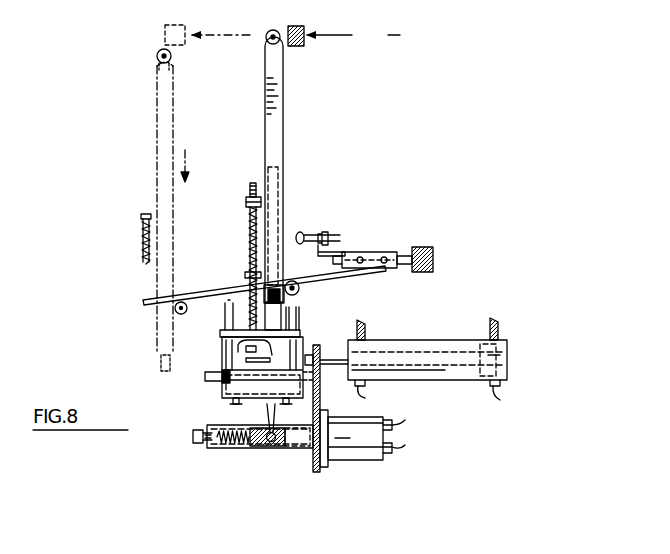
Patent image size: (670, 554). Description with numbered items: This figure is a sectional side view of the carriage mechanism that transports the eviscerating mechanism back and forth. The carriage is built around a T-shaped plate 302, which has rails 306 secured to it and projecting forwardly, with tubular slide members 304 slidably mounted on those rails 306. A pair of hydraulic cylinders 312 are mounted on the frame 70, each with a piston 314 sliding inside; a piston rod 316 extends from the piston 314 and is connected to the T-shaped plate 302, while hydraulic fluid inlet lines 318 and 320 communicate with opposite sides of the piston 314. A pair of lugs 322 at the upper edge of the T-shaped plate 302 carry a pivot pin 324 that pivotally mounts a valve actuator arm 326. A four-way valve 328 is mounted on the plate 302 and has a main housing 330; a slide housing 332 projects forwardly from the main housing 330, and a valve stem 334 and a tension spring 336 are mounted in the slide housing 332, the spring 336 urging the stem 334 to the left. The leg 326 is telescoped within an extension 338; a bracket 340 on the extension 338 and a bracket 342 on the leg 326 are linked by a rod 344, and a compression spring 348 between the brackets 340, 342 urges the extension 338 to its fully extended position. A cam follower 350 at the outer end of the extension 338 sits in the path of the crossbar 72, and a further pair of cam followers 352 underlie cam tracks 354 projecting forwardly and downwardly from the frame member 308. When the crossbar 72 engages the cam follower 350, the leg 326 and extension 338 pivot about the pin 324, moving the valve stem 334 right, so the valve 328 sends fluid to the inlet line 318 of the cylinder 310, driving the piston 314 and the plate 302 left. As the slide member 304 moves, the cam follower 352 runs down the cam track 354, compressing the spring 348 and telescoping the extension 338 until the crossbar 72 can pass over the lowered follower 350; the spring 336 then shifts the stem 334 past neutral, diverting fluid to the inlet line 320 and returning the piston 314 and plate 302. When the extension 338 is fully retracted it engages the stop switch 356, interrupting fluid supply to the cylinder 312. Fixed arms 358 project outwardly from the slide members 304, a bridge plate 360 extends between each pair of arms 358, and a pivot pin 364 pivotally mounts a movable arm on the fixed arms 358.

The frame 70 is at (430, 250).
The crossbar 72 is at (166, 28).
The T-shaped plate 302 is at (305, 470).
The tubular slide member 304 is at (243, 403).
The rail 306 is at (161, 372).
The frame member 308 is at (402, 252).
The cylinder 310 is at (420, 355).
The hydraulic cylinder 312 is at (449, 342).
The piston 314 is at (500, 355).
The piston rod 316 is at (326, 373).
The hydraulic fluid inlet line 318 is at (500, 400).
The hydraulic fluid inlet line 320 is at (366, 398).
The lug 322 is at (232, 374).
The pivot pin 324 is at (263, 360).
The valve actuator arm 326 is at (254, 272).
The four-way valve 328 is at (340, 452).
The main housing 330 is at (372, 445).
The slide housing 332 is at (290, 450).
The valve stem 334 is at (256, 450).
The tension spring 336 is at (226, 448).
The extension 338 is at (286, 95).
The bracket 340 is at (248, 198).
The bracket 342 is at (238, 347).
The rod 344 is at (254, 182).
The compression spring 348 is at (249, 218).
The cam follower 350 is at (158, 53).
The cam follower 352 is at (300, 288).
The cam track 354 is at (193, 297).
The stop switch 356 is at (300, 232).
The fixed arm 358 is at (222, 321).
The bridge plate 360 is at (282, 323).
The pivot pin 364 is at (218, 382).